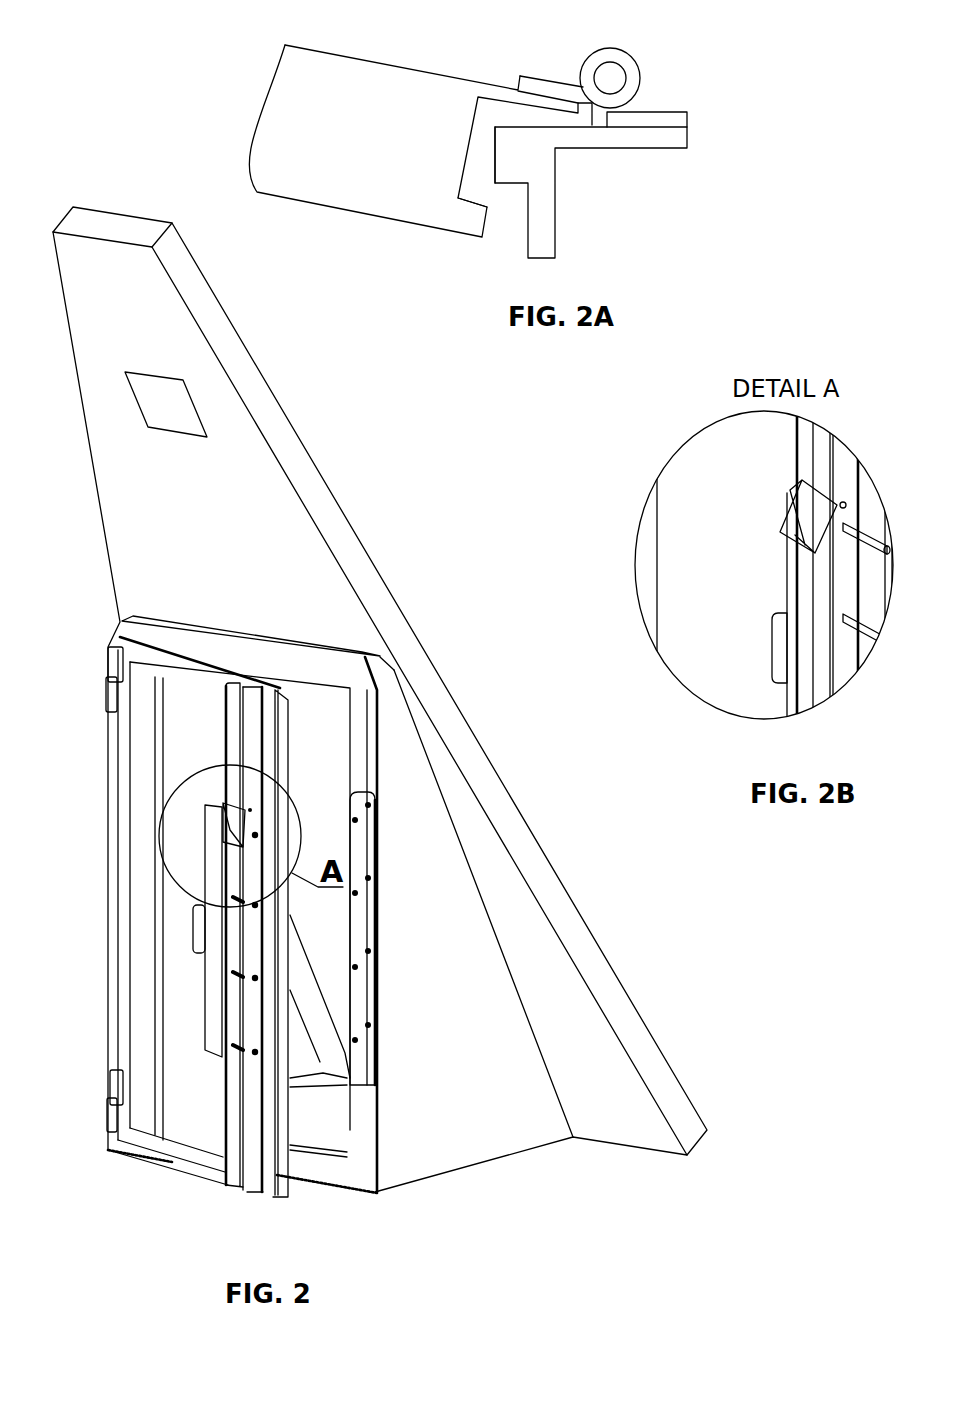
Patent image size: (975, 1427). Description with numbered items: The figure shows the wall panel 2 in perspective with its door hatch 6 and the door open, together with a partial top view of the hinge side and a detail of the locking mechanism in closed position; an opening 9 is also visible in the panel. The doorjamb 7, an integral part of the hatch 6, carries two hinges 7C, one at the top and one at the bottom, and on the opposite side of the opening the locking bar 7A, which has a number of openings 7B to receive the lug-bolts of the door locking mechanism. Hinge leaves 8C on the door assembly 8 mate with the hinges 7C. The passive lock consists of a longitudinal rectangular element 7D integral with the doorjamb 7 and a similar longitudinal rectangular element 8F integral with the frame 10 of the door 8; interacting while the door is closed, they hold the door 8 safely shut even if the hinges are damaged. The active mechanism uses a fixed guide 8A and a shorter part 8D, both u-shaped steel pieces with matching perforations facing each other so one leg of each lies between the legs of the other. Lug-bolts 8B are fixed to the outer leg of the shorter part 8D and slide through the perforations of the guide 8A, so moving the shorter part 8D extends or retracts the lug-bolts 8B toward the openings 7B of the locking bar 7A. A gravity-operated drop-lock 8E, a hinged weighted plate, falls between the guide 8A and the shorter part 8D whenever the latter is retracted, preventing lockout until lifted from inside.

In FIG. 2, the housing body 2 is at (245, 572).
In FIG. 2, the door hatch 6 is at (418, 885).
In FIG. 2, the doorjamb 7 is at (362, 715).
In FIG. 2A, the doorjamb 7 is at (551, 222).
In FIG. 2, the locking bar 7A is at (357, 843).
In FIG. 2, the openings 7B is at (377, 955).
In FIG. 2, the hinges 7C is at (107, 698).
In FIG. 2A, the hinges 7C is at (650, 118).
In FIG. 2A, the longitudinal rectangular element 7D is at (513, 165).
In FIG. 2, the door assembly 8 is at (190, 735).
In FIG. 2A, the door assembly 8 is at (381, 140).
In FIG. 2, the fixed guide 8A is at (252, 742).
In FIG. 2B, the fixed guide 8A is at (808, 428).
In FIG. 2, the lug-bolts 8B is at (377, 1007).
In FIG. 2B, the lug-bolts 8B is at (863, 545).
In FIG. 2, the door hinge leaf 8C is at (108, 663).
In FIG. 2A, the door hinge leaf 8C is at (532, 90).
In FIG. 2, the shorter part 8D is at (212, 988).
In FIG. 2B, the shorter part 8D is at (808, 582).
In FIG. 2, the drop-lock 8E is at (220, 838).
In FIG. 2B, the drop-lock 8E is at (790, 527).
In FIG. 2A, the longitudinal rectangular element 8F is at (470, 217).
In FIG. 2, the opening 9 is at (168, 400).
In FIG. 2, the frame 10 is at (182, 670).